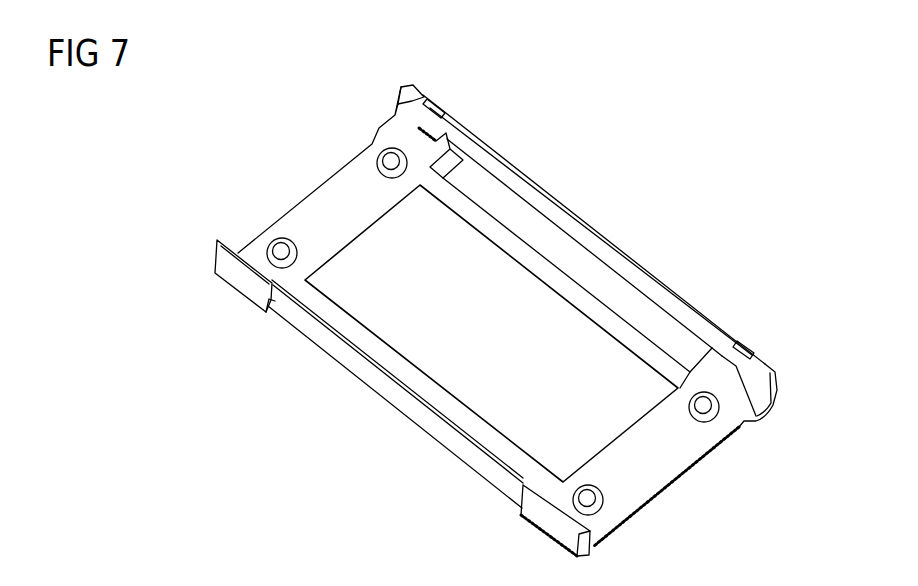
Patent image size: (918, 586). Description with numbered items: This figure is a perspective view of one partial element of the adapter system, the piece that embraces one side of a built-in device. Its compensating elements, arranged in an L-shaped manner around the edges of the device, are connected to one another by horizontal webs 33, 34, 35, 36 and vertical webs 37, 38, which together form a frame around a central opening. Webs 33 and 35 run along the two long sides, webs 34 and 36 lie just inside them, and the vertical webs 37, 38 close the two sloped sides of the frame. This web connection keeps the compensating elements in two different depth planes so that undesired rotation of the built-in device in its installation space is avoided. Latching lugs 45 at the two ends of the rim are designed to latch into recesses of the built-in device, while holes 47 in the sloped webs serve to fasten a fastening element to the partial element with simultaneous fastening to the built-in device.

The horizontal web 33 is at (580, 223).
The horizontal web 34 is at (496, 232).
The horizontal web 35 is at (427, 388).
The horizontal web 36 is at (348, 360).
The vertical web 37 is at (312, 212).
The vertical web 38 is at (658, 452).
The latching lug 45 is at (434, 111).
The hole 47 is at (376, 148).